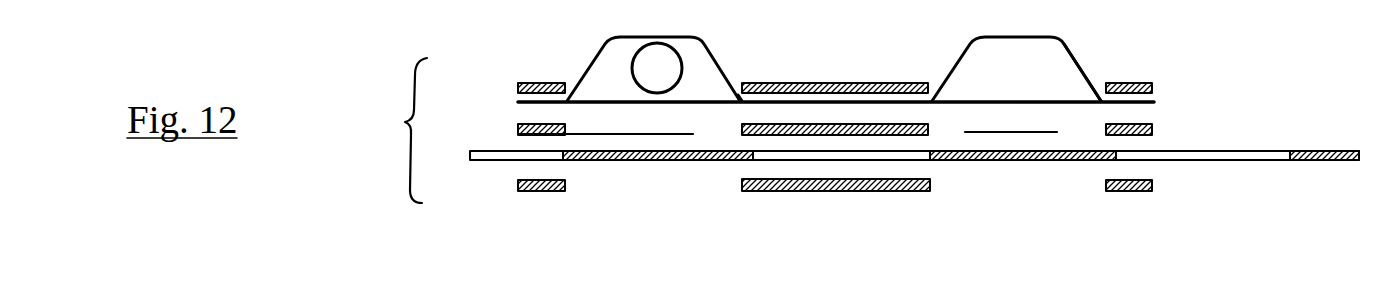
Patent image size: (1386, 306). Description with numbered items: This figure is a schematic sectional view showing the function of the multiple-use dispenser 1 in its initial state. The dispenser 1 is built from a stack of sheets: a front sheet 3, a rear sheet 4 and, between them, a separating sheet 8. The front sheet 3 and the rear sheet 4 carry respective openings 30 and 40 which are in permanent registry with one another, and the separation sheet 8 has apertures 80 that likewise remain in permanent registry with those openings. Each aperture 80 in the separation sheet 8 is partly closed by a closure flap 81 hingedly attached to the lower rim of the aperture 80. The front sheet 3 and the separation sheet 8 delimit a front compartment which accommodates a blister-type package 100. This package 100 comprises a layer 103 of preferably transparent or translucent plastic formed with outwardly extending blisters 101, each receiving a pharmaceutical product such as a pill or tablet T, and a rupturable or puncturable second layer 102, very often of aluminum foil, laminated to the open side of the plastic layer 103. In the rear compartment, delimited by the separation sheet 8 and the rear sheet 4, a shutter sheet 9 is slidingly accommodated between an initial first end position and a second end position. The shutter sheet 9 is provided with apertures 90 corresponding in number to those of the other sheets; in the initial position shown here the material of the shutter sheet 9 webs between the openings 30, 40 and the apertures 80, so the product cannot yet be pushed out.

The multiple-use dispenser 1 is at (392, 122).
The front sheet 3 is at (805, 82).
The rear sheet 4 is at (862, 192).
The separating sheet 8 is at (1150, 128).
The shutter sheet 9 is at (1300, 148).
The opening 30 is at (742, 76).
The opening 40 is at (590, 190).
The aperture 80 is at (719, 134).
The closure flap 81 is at (643, 135).
The aperture 90 is at (910, 157).
The blister-type package 100 is at (1105, 65).
The blister 101 is at (962, 47).
The second layer 102 is at (540, 104).
The layer 103 is at (583, 68).
The tablet T is at (655, 68).